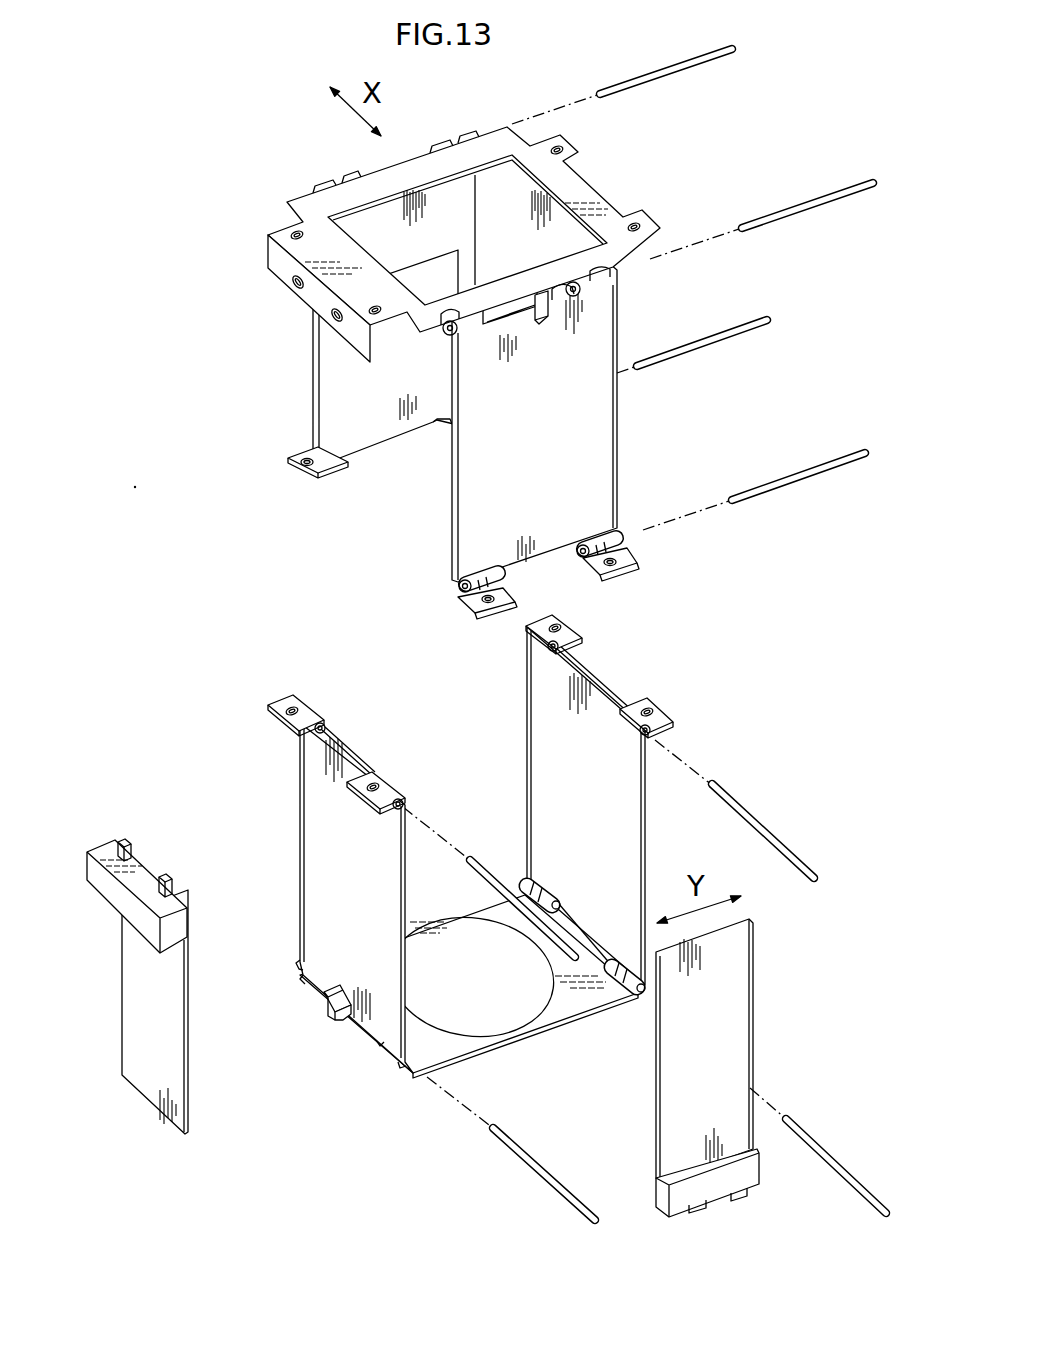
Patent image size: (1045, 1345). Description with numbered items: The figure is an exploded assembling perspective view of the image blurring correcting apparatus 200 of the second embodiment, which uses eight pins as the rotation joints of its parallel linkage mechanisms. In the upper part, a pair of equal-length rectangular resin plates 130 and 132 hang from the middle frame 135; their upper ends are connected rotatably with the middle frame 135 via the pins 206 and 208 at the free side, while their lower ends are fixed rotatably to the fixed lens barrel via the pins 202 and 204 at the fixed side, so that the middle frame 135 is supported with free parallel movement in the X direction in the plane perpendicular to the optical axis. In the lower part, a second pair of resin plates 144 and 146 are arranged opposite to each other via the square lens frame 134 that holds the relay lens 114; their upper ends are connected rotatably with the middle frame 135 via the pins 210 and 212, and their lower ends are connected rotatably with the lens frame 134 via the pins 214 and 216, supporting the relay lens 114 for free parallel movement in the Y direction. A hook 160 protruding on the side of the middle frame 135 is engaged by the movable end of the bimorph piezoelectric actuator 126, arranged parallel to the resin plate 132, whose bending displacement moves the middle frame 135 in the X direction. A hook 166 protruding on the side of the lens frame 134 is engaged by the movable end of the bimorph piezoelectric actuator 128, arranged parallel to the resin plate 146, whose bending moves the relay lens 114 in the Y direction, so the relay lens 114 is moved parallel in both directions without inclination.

The relay lens 114 is at (490, 1005).
The bimorph piezoelectric actuator 126 is at (740, 995).
The bimorph piezoelectric actuator 128 is at (150, 1030).
The resin plate 130 is at (377, 423).
The resin plate 132 is at (614, 432).
The lens frame 134 is at (570, 1003).
The middle frame 135 is at (575, 188).
The resin plate 144 is at (645, 838).
The resin plate 146 is at (313, 830).
The hook 160 is at (538, 324).
The hook 166 is at (332, 1020).
The image blurring correcting apparatus 200 is at (268, 182).
The pin 202 is at (705, 342).
The pin 204 is at (806, 474).
The pin 206 is at (629, 84).
The pin 208 is at (778, 215).
The pin 210 is at (772, 834).
The pin 212 is at (480, 864).
The pin 214 is at (846, 1172).
The pin 216 is at (521, 1156).